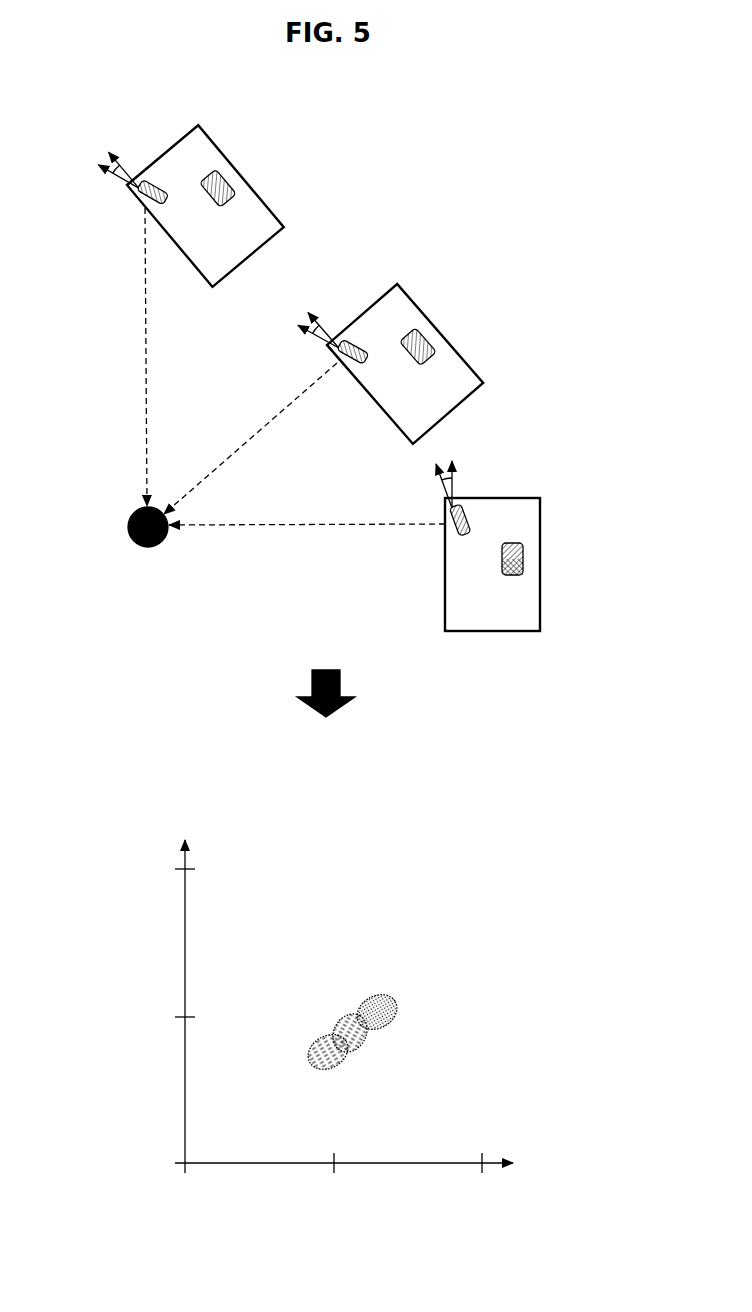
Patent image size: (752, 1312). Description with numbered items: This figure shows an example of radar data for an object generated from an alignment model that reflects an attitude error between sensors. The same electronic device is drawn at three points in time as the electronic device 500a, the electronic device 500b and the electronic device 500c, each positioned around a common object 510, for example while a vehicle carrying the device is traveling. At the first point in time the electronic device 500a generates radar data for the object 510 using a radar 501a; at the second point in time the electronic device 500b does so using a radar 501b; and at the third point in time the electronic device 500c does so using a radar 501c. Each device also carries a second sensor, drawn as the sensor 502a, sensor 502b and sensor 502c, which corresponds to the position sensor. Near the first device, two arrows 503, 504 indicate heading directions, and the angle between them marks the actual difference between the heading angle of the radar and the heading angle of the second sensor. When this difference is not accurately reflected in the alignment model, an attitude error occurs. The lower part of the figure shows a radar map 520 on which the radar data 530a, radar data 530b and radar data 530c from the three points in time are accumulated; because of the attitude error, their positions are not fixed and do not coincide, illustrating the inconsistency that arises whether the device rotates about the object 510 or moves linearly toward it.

The electronic device 500a is at (486, 532).
The electronic device 500b is at (388, 337).
The electronic device 500c is at (208, 162).
The radar 501a is at (452, 533).
The radar 501b is at (351, 366).
The radar 501c is at (157, 185).
The camera module of first device 502a is at (525, 558).
The camera module of second device 502b is at (422, 337).
The camera module of third device 502c is at (223, 180).
The device heading direction 503 is at (444, 491).
The reference direction 504 is at (455, 484).
The object 510 is at (130, 514).
The radar map 520 is at (330, 984).
The radar data 530a is at (320, 1067).
The radar data 530b is at (371, 1037).
The radar data 530c is at (388, 1004).